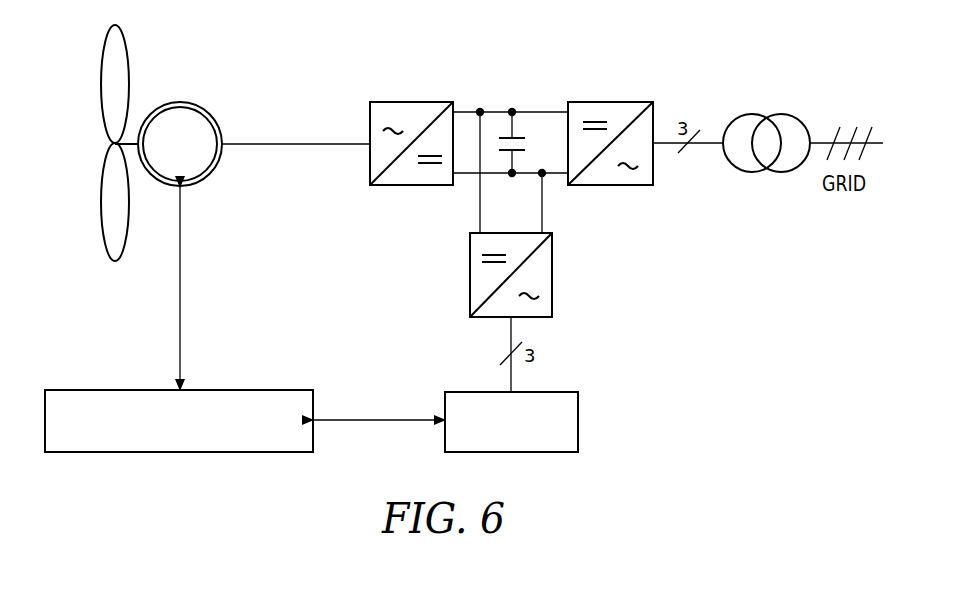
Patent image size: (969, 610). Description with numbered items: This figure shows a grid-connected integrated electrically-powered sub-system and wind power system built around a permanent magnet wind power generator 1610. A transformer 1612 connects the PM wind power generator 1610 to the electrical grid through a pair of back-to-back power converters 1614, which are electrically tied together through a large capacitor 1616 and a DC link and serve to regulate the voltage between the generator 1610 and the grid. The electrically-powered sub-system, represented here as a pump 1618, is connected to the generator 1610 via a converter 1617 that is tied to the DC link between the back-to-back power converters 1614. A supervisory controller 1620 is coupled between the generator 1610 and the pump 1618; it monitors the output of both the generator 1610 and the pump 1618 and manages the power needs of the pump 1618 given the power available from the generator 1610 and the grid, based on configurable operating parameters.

The PM wind power generator 1610 is at (181, 102).
The back-to-back power converters 1614 is at (407, 102).
The capacitor 1616 is at (516, 132).
The transformer 1612 is at (780, 112).
The converter 1617 is at (553, 276).
The pump 1618 is at (579, 420).
The supervisory controller 1620 is at (235, 390).